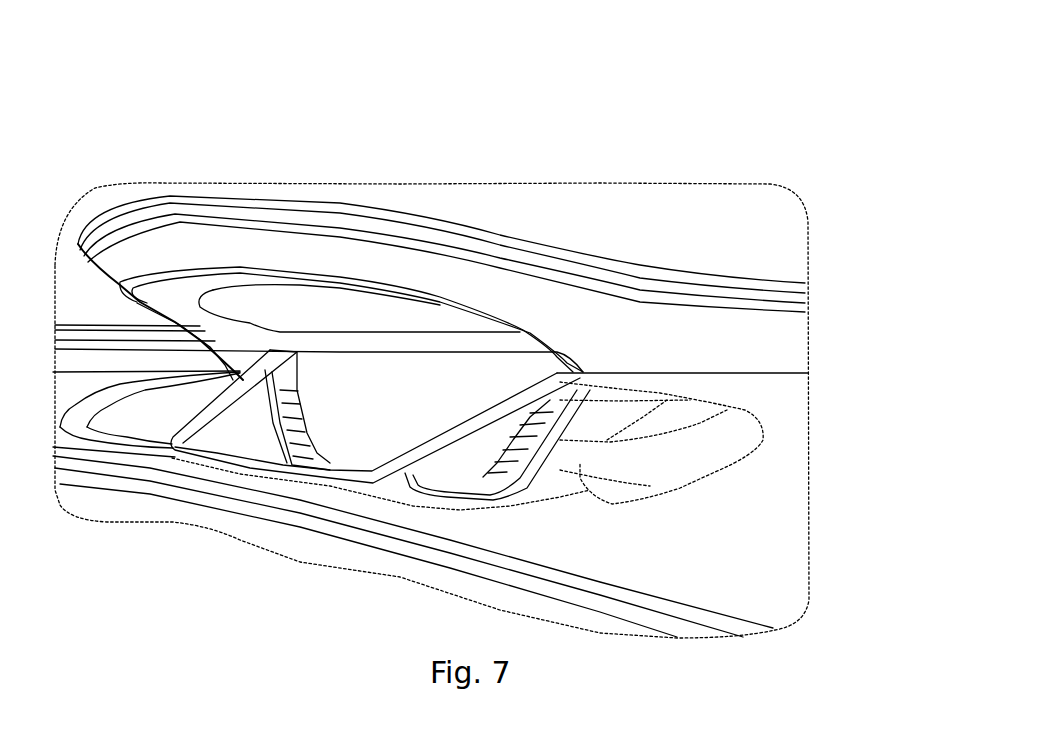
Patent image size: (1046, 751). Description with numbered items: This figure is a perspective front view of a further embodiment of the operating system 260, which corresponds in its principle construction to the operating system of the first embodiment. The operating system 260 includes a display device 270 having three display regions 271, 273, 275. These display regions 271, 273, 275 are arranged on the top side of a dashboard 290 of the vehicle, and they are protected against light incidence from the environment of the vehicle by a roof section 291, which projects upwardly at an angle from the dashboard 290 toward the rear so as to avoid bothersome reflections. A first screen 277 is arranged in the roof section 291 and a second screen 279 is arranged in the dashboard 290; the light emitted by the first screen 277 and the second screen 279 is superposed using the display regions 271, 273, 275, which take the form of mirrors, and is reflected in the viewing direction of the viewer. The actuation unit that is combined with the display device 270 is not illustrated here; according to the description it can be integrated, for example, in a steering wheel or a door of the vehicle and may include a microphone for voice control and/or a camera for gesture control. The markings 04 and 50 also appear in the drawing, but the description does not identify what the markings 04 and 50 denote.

The operating system 260 is at (726, 172).
The display device 270 is at (690, 533).
The display region 271 is at (505, 470).
The display region 273 is at (580, 457).
The display region 275 is at (673, 427).
The first screen 277 is at (320, 297).
The second screen 279 is at (390, 367).
The dashboard 290 is at (757, 543).
The roof section 291 is at (507, 237).
The frame opening 04 is at (375, 416).
The lower panel insert 50 is at (497, 445).